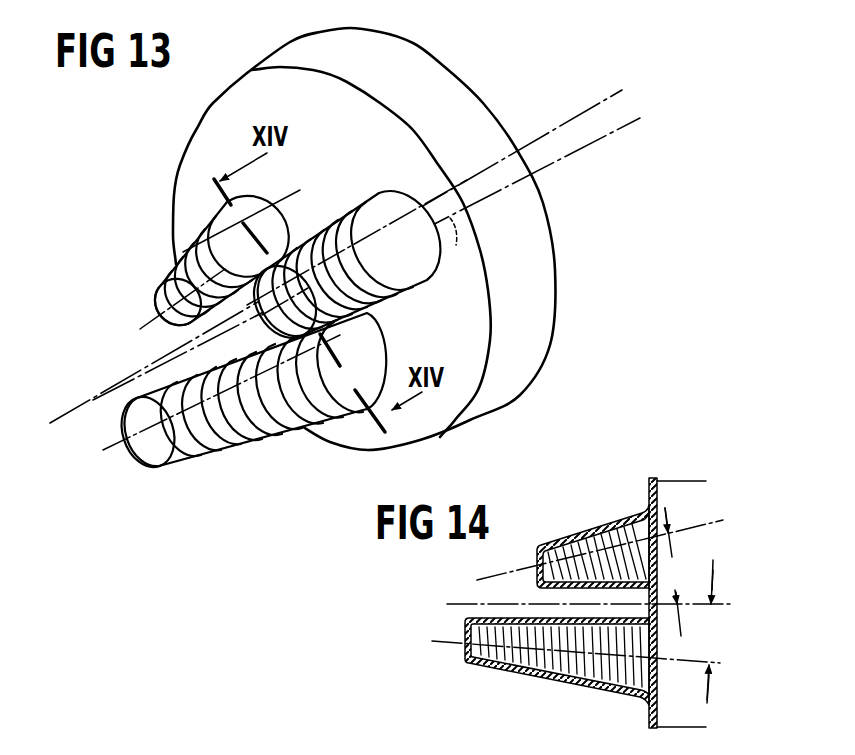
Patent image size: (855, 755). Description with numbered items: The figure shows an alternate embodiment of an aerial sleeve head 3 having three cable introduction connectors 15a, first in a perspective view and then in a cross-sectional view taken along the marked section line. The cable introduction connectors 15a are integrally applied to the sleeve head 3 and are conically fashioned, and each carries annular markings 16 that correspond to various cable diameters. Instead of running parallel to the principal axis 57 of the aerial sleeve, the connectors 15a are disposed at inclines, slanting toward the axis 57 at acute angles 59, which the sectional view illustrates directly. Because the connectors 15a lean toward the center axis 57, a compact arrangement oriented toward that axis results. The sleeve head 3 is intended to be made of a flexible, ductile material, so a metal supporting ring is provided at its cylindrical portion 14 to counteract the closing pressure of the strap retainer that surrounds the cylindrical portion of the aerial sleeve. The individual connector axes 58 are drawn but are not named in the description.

In FIG. 13, the sleeve head 3 is at (488, 100).
In FIG. 14, the sleeve head 3 is at (677, 603).
In FIG. 13, the cylindrical portion 14 is at (297, 55).
In FIG. 13, the cable introduction connectors 15a is at (262, 340).
In FIG. 14, the cable introduction connectors 15a is at (580, 530).
In FIG. 13, the annular markings 16 is at (186, 251).
In FIG. 13, the principal axis 57 is at (93, 400).
In FIG. 14, the principal axis 57 is at (455, 600).
In FIG. 13, the cone axis 58 is at (157, 322).
In FIG. 14, the cone axis 58 is at (477, 580).
In FIG. 14, the acute angles 59 is at (696, 605).